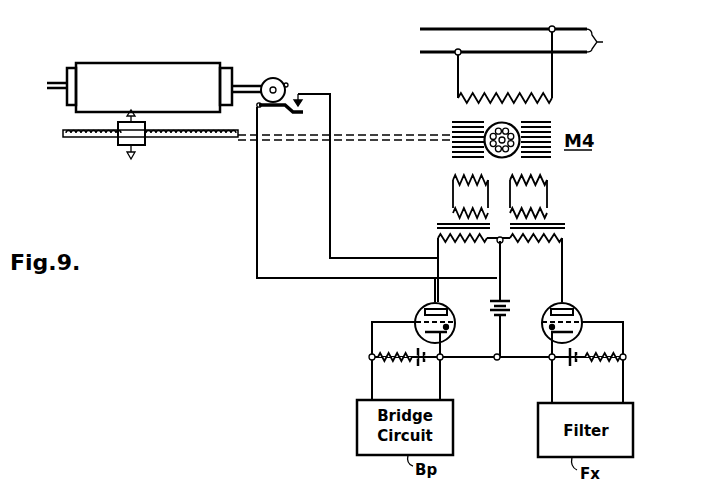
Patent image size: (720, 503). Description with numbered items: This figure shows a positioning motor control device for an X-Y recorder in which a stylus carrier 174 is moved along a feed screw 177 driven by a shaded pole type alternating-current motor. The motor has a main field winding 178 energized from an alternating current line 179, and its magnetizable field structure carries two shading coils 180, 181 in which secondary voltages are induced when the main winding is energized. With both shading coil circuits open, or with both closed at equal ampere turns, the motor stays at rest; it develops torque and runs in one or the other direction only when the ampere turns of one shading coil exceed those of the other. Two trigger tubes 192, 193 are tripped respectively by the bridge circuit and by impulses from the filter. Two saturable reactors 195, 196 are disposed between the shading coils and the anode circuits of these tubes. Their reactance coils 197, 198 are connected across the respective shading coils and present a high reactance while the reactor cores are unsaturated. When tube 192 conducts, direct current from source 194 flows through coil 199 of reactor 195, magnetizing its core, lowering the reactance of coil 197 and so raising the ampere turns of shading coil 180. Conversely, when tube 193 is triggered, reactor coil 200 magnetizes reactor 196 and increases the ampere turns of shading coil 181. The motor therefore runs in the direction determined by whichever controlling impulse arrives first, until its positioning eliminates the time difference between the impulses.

The stylus carrier 174 is at (140, 140).
The feed screw 177 is at (108, 138).
The main field winding 178 is at (497, 80).
The alternating current line 179 is at (528, 41).
The shading coil 180 is at (453, 180).
The shading coil 181 is at (547, 180).
The trigger tube 192 is at (420, 313).
The trigger tube 193 is at (580, 311).
The source 194 is at (508, 320).
The saturable reactor 195 is at (437, 224).
The saturable reactor 196 is at (567, 227).
The reactance coil 197 is at (453, 213).
The reactance coil 198 is at (547, 213).
The reactor coil 199 is at (485, 243).
The reactor coil 200 is at (522, 247).